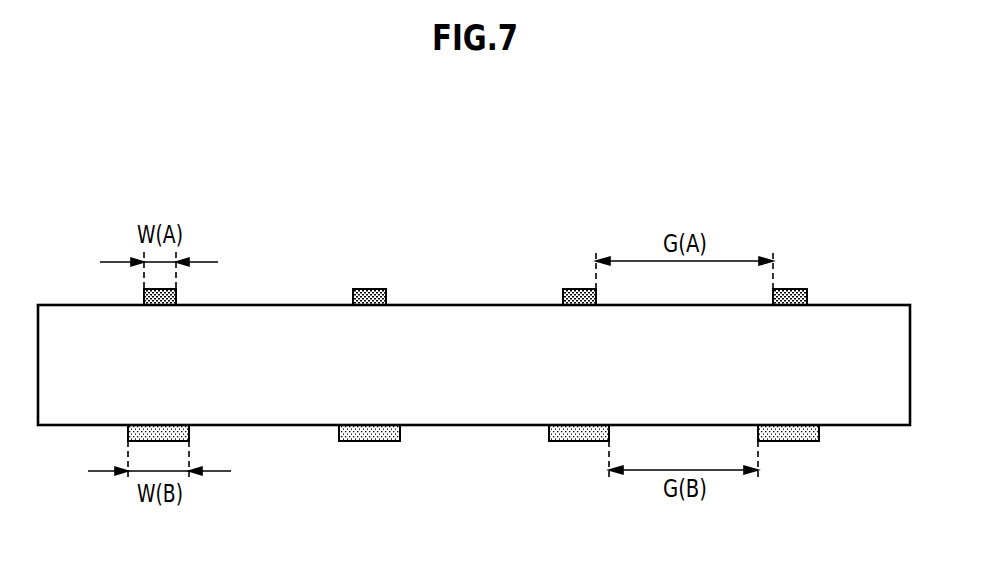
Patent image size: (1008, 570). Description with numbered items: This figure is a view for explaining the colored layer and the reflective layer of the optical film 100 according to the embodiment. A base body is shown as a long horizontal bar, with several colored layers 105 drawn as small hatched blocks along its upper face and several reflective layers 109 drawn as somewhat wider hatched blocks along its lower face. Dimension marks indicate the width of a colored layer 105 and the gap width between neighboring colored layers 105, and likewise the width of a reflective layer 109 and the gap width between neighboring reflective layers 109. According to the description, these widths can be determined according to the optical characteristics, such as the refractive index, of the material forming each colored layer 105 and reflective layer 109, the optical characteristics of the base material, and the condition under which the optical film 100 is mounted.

The optical film 100 is at (452, 128).
The colored layer 105 is at (369, 288).
The reflective layer 109 is at (370, 441).